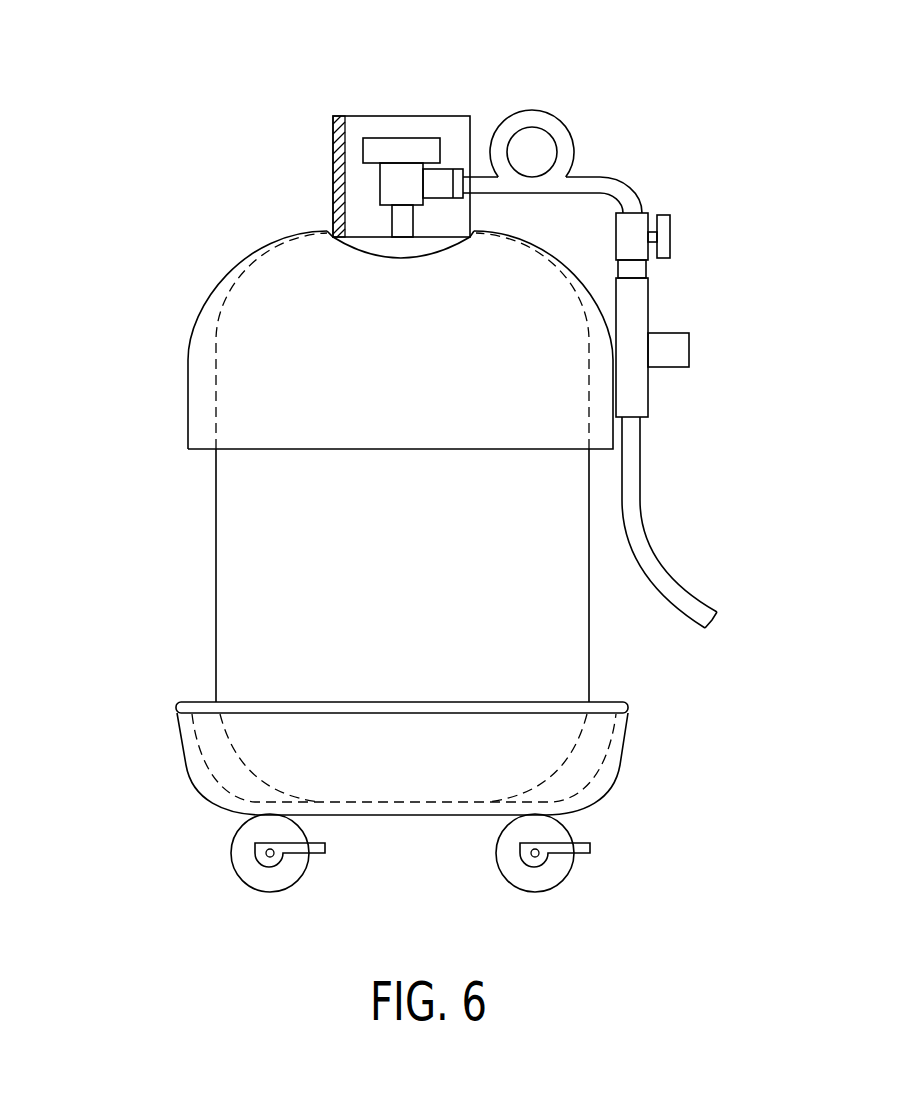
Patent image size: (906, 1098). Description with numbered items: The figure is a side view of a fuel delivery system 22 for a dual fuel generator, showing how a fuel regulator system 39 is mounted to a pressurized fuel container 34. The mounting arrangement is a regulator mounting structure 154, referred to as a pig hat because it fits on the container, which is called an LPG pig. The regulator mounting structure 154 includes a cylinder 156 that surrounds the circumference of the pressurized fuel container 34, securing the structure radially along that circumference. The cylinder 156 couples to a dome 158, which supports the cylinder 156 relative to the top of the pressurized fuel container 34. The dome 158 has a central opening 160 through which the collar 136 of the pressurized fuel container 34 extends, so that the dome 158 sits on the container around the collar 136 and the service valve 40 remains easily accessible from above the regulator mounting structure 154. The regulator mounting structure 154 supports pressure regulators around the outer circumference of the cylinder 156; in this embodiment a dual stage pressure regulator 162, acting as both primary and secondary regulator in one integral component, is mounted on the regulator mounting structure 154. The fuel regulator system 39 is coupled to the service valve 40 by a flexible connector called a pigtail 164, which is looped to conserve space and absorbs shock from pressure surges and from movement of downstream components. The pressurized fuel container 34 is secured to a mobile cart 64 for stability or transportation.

The fuel delivery system 22 is at (628, 80).
The pressurized fuel container 34 is at (215, 635).
The fuel regulator system 39 is at (687, 210).
The service valve 40 is at (402, 138).
The mobile cart 64 is at (622, 747).
The collar 136 is at (350, 116).
The regulator mounting structure 154 is at (190, 283).
The cylinder 156 is at (187, 368).
The dome 158 is at (230, 267).
The central opening 160 is at (331, 230).
The dual stage pressure regulator 162 is at (703, 272).
The pigtail 164 is at (553, 117).